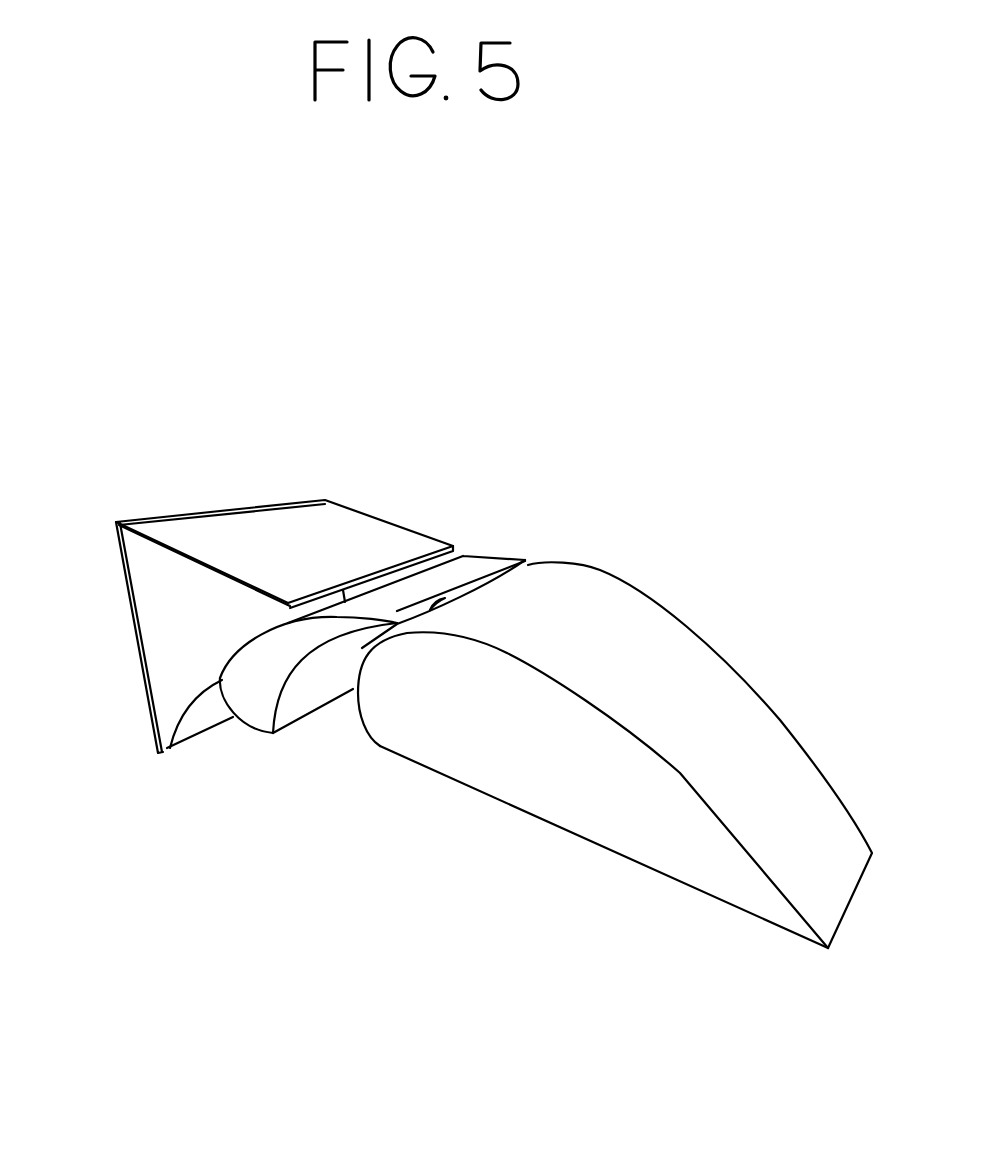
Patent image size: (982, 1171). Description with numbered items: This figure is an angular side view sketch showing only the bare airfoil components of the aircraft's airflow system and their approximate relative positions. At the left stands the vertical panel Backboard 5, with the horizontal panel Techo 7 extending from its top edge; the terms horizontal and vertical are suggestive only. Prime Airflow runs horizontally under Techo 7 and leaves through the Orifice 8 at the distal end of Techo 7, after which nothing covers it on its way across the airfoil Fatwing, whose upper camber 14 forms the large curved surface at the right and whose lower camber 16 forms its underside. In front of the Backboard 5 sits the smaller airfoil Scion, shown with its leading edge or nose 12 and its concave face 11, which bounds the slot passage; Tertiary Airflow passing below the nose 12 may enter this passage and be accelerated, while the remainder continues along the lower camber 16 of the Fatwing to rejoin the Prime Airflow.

The backboard 5 is at (148, 573).
The techo 7 is at (332, 527).
The orifice at Techo end 8 is at (460, 556).
The concave face of airfoil Scion in slot passage 11 is at (322, 690).
The leading edge of airfoil Scion (nose) 12 is at (165, 776).
The upper camber of airfoil Fatwing 14 is at (655, 618).
The lower camber of airfoil Fatwing 16 is at (490, 797).